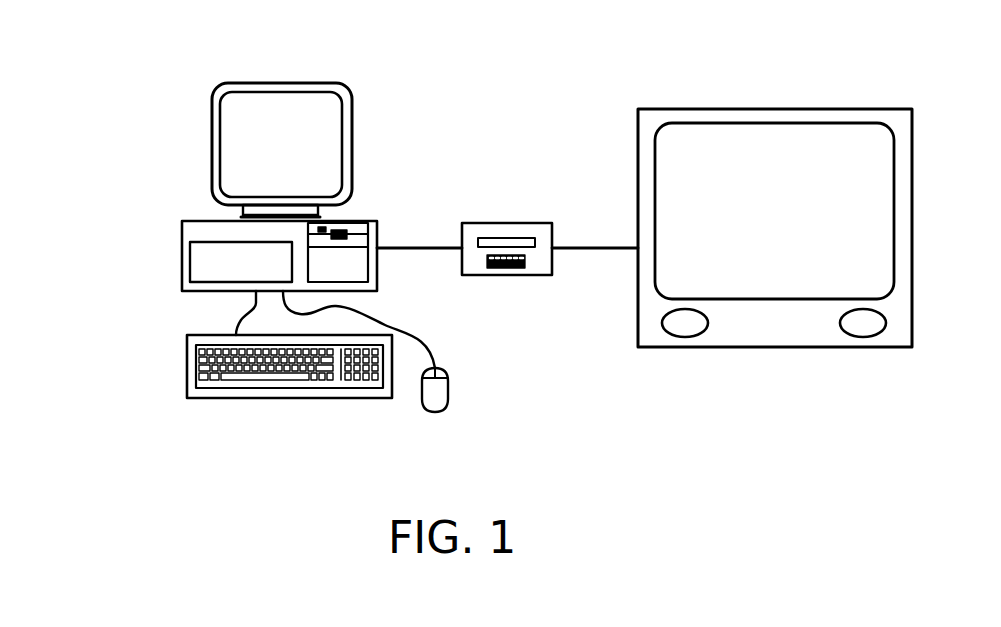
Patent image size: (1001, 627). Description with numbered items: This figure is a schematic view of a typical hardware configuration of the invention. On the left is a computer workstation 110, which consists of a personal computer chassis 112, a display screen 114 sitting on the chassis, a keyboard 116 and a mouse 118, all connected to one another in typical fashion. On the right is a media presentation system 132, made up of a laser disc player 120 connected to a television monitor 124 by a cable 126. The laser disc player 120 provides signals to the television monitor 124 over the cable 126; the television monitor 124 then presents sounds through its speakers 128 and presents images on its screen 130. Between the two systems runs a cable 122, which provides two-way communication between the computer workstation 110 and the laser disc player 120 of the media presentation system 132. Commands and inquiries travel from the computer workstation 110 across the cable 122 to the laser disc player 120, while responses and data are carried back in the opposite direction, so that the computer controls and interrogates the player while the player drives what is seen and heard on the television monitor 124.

The computer workstation 110 is at (136, 171).
The personal computer chassis 112 is at (182, 248).
The display screen 114 is at (352, 110).
The keyboard 116 is at (277, 398).
The mouse 118 is at (448, 395).
The laser disc player 120 is at (505, 223).
The cable 122 is at (418, 248).
The television monitor 124 is at (717, 109).
The cable 126 is at (588, 248).
The speakers 128 is at (860, 337).
The screen 130 is at (803, 153).
The media presentation system 132 is at (612, 415).